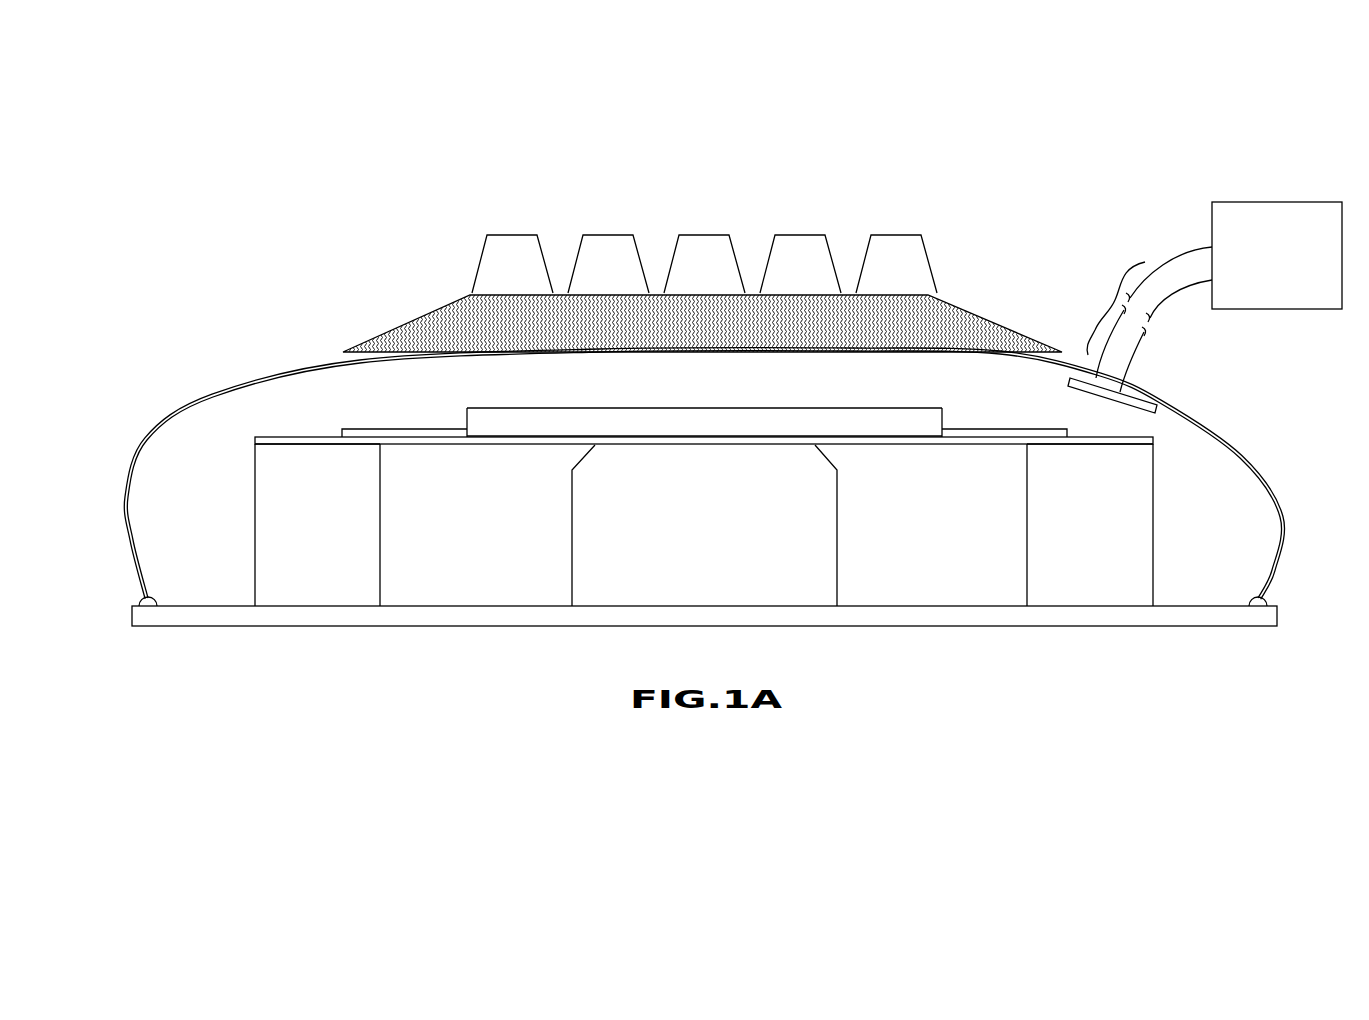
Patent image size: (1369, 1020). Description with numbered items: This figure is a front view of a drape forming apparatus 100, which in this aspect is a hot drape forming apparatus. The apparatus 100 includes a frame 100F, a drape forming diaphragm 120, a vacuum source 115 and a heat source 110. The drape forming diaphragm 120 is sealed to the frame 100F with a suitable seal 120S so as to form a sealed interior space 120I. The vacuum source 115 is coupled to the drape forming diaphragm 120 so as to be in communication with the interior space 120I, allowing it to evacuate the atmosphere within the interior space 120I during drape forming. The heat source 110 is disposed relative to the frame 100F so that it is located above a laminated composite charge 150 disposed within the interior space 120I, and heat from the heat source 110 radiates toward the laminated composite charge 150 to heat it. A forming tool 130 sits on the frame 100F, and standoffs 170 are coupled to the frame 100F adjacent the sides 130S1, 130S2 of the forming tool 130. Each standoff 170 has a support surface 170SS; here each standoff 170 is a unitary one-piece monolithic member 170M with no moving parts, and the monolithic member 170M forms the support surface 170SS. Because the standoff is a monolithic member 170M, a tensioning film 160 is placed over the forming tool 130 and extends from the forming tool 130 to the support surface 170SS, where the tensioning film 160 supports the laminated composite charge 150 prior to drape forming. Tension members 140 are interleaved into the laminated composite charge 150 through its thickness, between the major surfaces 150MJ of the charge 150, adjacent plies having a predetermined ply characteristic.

The drape forming apparatus 100 is at (188, 238).
The frame 100F is at (945, 620).
The heat source 110 is at (945, 218).
The vacuum source 115 is at (1267, 202).
The drape forming diaphragm 120 is at (156, 424).
The sealed interior space 120I is at (602, 371).
The seal 120S is at (146, 598).
The forming tool 130 is at (590, 582).
The side of the forming tool 130S1 is at (840, 545).
The side of the forming tool 130S2 is at (570, 540).
The tension member 140 is at (395, 428).
The laminated composite charge 150 is at (512, 407).
The major surface 150MJ is at (702, 407).
The tensioning film 160 is at (423, 446).
The standoff 170 is at (266, 484).
The monolithic member 170M is at (267, 570).
The support surface 170SS is at (282, 446).